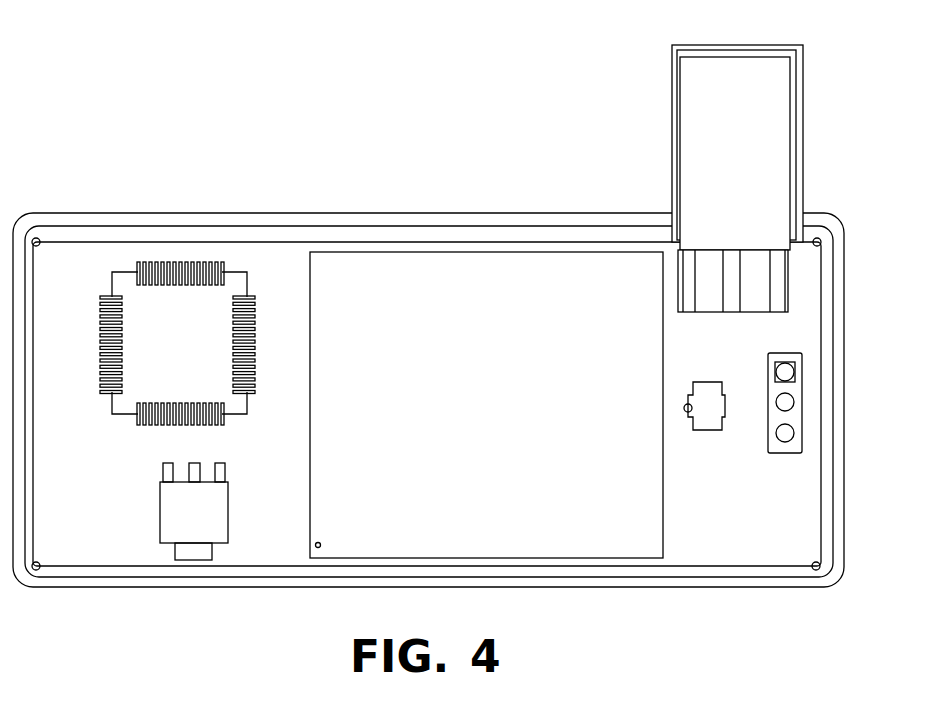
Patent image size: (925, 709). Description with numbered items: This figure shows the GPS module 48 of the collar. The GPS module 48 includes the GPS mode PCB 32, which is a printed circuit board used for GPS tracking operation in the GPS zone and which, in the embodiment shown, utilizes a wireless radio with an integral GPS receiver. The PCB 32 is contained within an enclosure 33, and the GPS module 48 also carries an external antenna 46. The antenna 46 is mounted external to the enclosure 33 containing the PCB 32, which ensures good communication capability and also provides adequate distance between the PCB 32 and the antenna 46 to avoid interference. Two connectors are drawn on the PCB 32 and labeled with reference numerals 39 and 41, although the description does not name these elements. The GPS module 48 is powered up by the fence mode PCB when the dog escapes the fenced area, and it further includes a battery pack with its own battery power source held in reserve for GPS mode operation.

The GPS module 48 is at (120, 182).
The enclosure 33 is at (485, 212).
The GPS mode PCB 32 is at (278, 267).
The external antenna 46 is at (805, 115).
The connector J2 39 is at (725, 410).
The connector J1 41 is at (785, 453).